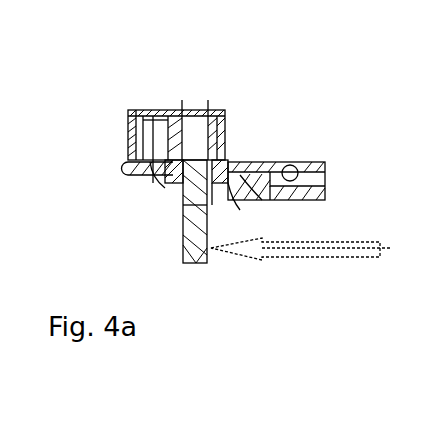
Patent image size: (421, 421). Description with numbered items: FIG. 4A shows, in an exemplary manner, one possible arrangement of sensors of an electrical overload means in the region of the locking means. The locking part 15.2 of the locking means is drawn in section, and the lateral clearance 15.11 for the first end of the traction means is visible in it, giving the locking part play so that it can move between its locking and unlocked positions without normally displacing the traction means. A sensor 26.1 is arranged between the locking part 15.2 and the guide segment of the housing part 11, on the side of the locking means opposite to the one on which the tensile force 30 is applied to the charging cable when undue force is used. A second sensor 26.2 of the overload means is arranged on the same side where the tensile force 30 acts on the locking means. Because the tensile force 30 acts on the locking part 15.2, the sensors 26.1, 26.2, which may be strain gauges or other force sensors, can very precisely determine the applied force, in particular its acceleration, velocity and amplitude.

The lateral clearance 15.11 is at (143, 140).
The locking part 15.2 is at (220, 142).
The flange / mounting plate 11 is at (243, 167).
The sensor 26.1 is at (178, 210).
The second sensor 26.2 is at (222, 208).
The tensile force 30 is at (301, 237).